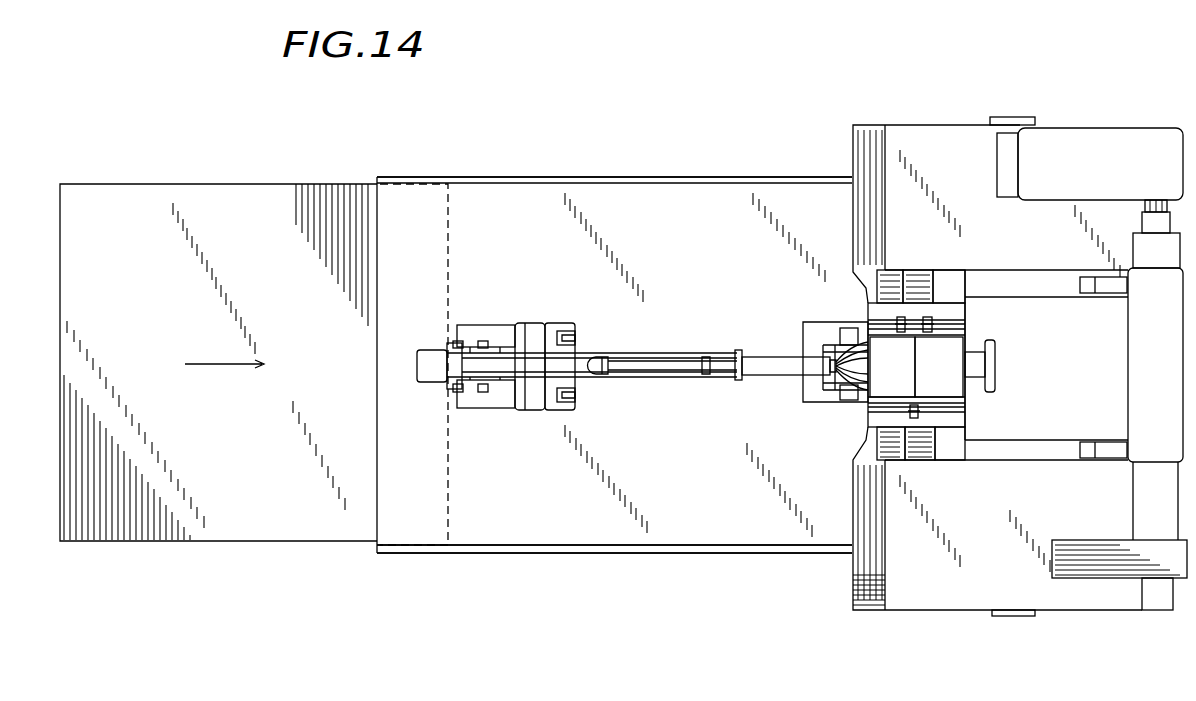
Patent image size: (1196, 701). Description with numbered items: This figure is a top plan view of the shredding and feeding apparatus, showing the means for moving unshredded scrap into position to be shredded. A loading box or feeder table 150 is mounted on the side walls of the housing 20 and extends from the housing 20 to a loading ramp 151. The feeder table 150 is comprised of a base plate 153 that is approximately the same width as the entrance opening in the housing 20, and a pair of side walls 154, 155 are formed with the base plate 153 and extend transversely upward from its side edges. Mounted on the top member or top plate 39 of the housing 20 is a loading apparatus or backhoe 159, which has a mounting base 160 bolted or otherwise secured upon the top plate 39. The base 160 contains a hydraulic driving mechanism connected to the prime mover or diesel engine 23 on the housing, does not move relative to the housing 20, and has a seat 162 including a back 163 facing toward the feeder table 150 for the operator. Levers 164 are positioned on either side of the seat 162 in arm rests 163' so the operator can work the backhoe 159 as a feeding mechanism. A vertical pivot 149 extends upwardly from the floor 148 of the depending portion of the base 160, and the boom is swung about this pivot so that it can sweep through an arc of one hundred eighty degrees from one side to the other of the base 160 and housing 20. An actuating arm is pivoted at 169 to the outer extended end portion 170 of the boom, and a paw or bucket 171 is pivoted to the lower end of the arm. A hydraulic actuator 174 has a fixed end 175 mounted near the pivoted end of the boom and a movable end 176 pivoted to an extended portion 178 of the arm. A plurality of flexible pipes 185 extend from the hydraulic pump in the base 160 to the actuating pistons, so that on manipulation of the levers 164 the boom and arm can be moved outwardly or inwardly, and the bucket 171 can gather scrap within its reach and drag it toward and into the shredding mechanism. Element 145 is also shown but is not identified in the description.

The housing 20 is at (954, 134).
The prime mover or diesel engine 23 is at (1092, 369).
The top member or top plate 39 is at (1055, 305).
The coupling 145 is at (826, 393).
The floor 148 is at (812, 325).
The vertical pivot 149 is at (858, 368).
The loading box or feeder table 150 is at (553, 533).
The loading ramp 151 is at (282, 525).
The base plate 153 is at (637, 522).
The side wall 154 is at (728, 552).
The side wall 155 is at (568, 176).
The loading apparatus or backhoe 159 is at (765, 378).
The mounting base 160 is at (875, 414).
The seat 162 is at (953, 368).
The back 163 is at (1014, 366).
The arm rests 163' is at (958, 349).
The levers 164 is at (900, 318).
The pivot 169 is at (480, 395).
The outer extended end portion 170 is at (665, 377).
The paw or bucket 171 is at (500, 332).
The hydraulic actuator 174 is at (657, 355).
The fixed end 175 is at (720, 352).
The movable end 176 is at (453, 343).
The extended portion 178 is at (453, 392).
The flexible pipes 185 is at (858, 366).